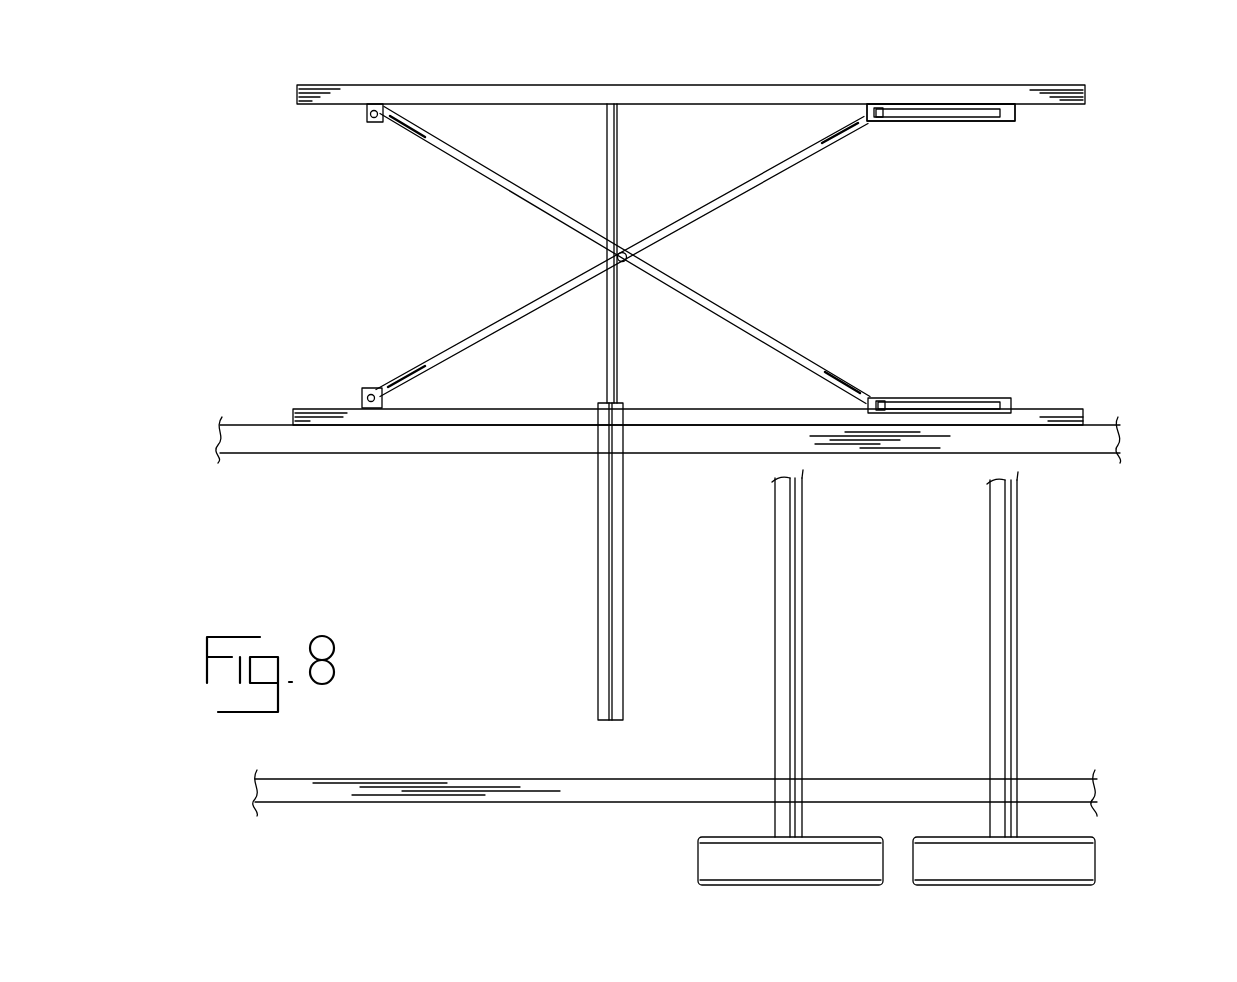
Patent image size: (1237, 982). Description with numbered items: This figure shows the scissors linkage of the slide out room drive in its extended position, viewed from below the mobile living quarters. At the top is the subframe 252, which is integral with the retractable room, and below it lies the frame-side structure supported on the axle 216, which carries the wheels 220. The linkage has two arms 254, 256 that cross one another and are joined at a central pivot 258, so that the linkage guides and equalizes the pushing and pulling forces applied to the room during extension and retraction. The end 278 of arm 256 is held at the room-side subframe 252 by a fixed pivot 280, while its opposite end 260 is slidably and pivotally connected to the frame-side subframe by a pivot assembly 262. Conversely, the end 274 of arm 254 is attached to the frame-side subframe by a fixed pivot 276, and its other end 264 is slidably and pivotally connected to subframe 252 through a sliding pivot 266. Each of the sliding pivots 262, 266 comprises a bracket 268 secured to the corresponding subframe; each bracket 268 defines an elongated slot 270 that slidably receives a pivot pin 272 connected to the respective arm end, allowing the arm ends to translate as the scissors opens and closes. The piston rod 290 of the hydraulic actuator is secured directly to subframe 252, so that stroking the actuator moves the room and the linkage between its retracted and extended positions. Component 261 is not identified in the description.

The axle 216 is at (783, 640).
The wheel 220 is at (728, 865).
The subframe 252 is at (332, 88).
The arm 254 is at (800, 167).
The arm 256 is at (770, 315).
The pivot 258 is at (630, 258).
The end of arm 260 is at (805, 368).
The lower shelf 261 is at (1012, 414).
The pivot assembly 262 is at (1030, 388).
The end of arm 264 is at (857, 125).
The sliding pivot 266 is at (993, 102).
The bracket 268 is at (1015, 119).
The elongated slot 270 is at (944, 113).
The pivot pin 272 is at (882, 108).
The end of arm 274 is at (420, 372).
The fixed pivot 276 is at (366, 392).
The end of arm 278 is at (410, 128).
The fixed pivot 280 is at (368, 118).
The piston rod 290 is at (610, 147).